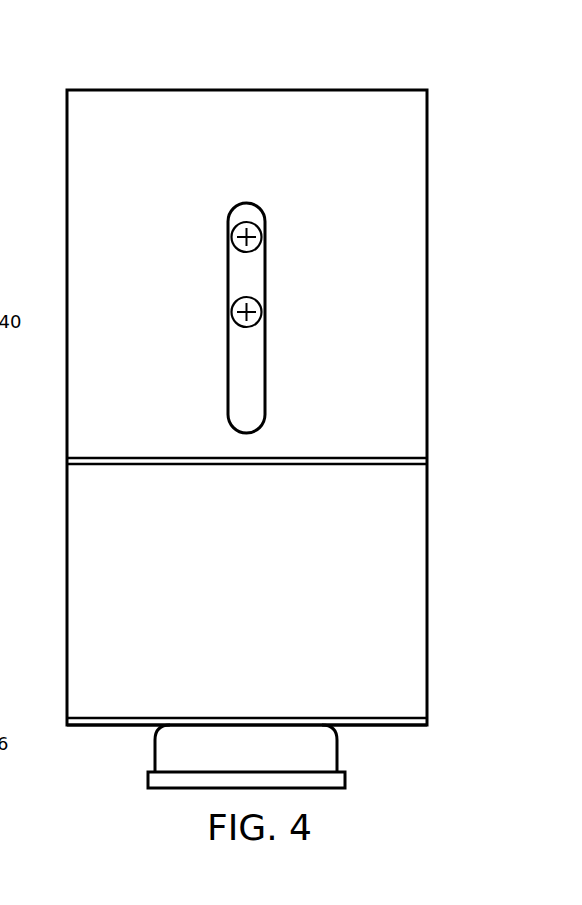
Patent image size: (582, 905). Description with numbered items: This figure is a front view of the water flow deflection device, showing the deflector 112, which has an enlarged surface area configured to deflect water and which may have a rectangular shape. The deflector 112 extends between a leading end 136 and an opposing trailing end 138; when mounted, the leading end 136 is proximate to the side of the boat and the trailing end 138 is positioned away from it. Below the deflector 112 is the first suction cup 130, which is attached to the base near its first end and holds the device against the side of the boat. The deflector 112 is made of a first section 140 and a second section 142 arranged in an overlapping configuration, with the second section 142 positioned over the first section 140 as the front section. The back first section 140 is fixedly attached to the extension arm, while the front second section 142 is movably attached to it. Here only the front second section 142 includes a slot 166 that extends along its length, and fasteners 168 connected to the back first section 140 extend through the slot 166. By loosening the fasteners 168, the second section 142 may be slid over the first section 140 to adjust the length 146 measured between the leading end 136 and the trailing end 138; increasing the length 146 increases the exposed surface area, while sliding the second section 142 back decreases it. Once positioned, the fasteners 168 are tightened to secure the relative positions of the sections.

The deflector 112 is at (128, 645).
The first suction cup 130 is at (340, 757).
The leading end 136 is at (427, 728).
The trailing end 138 is at (382, 87).
The first section 140 is at (82, 644).
The second section 142 is at (130, 122).
The length 146 is at (542, 92).
The slot 166 is at (265, 398).
The fasteners 168 is at (265, 237).